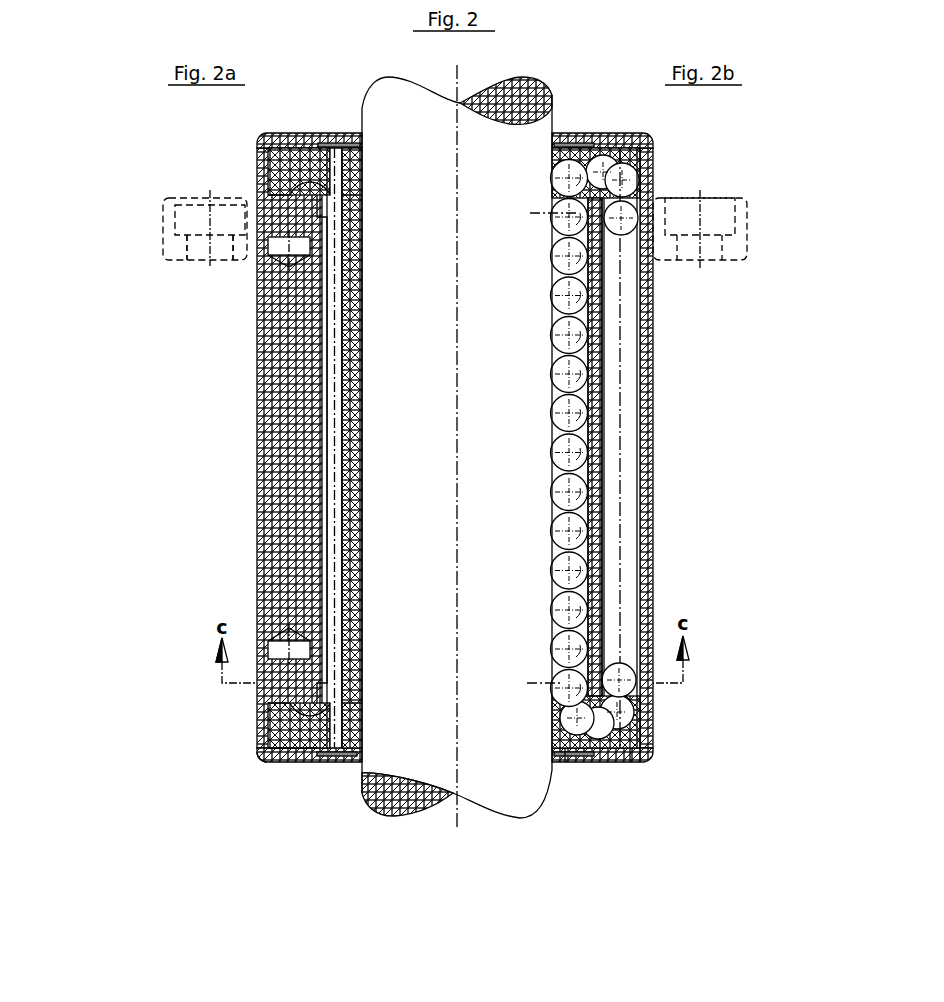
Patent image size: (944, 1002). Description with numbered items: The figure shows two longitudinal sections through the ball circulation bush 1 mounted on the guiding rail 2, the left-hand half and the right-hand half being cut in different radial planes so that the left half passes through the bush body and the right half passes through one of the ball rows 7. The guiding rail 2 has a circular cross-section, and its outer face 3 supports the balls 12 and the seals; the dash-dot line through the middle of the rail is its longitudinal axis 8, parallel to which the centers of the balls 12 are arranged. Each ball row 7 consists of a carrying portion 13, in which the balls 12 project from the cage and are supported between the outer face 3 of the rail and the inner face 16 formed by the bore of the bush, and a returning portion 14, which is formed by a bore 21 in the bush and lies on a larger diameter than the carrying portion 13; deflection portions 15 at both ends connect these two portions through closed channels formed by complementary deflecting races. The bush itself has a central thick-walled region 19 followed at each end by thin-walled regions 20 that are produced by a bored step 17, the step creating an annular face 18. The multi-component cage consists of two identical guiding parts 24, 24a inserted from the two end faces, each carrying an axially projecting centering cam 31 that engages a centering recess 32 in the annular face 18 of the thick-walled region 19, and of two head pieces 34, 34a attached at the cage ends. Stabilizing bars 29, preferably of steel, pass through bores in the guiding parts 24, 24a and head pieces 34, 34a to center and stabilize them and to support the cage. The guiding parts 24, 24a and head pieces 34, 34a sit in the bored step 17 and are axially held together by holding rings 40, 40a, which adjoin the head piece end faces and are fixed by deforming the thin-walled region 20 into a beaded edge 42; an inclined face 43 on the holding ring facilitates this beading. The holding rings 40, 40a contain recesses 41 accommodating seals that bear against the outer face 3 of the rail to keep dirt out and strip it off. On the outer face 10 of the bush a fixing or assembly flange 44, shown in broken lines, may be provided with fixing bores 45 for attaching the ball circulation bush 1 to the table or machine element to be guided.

In FIG. 2B, the ball circulation bush 1 is at (690, 487).
In FIG. 2B, the guiding rail 2 is at (503, 790).
In FIG. 2A, the outer face 3 is at (362, 778).
In FIG. 2B, the ball rows 7 is at (565, 540).
In FIG. 2, the longitudinal axis 8 is at (456, 390).
In FIG. 2B, the outer face 10 is at (653, 437).
In FIG. 2B, the balls 12 is at (580, 330).
In FIG. 2B, the carrying portion 13 is at (535, 683).
In FIG. 2B, the returning portion 14 is at (626, 293).
In FIG. 2B, the deflection portions 15 is at (593, 162).
In FIG. 2B, the inner face 16 is at (595, 480).
In FIG. 2A, the bored step 17 is at (262, 748).
In FIG. 2A, the annular face 18 is at (276, 757).
In FIG. 2A, the thick-walled region 19 is at (280, 527).
In FIG. 2A, the thin-walled regions 20 is at (268, 705).
In FIG. 2B, the bores 21 is at (602, 307).
In FIG. 2A, the guiding part 24 is at (352, 437).
In FIG. 2A, the guiding part 24a is at (356, 487).
In FIG. 2A, the stabilizing bars 29 is at (337, 575).
In FIG. 2A, the centering cam 31 is at (272, 253).
In FIG. 2A, the centering recess 32 is at (318, 213).
In FIG. 2A, the head piece 34 is at (287, 157).
In FIG. 2A, the head piece 34a is at (308, 762).
In FIG. 2B, the holding ring 40 is at (628, 140).
In FIG. 2B, the holding ring 40a is at (607, 762).
In FIG. 2B, the recesses 41 is at (565, 762).
In FIG. 2B, the beaded edge 42 is at (641, 758).
In FIG. 2B, the inclined face 43 is at (630, 762).
In FIG. 2A, the fixing or assembly flange 44 is at (176, 247).
In FIG. 2A, the fixing bores 45 is at (204, 250).